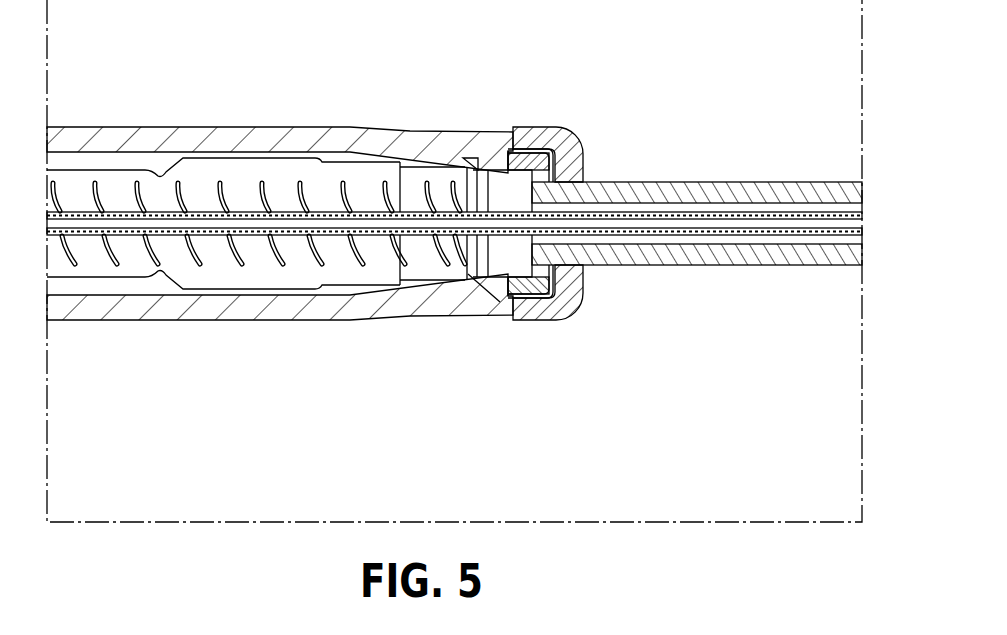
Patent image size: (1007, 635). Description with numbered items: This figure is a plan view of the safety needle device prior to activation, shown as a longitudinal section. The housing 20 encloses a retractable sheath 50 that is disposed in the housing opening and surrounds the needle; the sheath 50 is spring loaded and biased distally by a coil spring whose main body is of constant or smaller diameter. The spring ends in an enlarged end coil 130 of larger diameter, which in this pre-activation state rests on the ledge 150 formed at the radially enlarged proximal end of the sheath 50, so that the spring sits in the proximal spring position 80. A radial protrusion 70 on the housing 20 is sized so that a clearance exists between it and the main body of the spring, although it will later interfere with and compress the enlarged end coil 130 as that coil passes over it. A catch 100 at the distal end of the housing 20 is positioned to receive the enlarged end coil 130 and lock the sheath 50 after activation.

The housing 20 is at (526, 125).
The retractable sheath 50 is at (787, 181).
The radial protrusion 70 is at (160, 176).
The proximal spring position 80 is at (459, 158).
The catch 100 is at (513, 263).
The enlarged end coil 130 is at (442, 279).
The ledge 150 is at (470, 276).